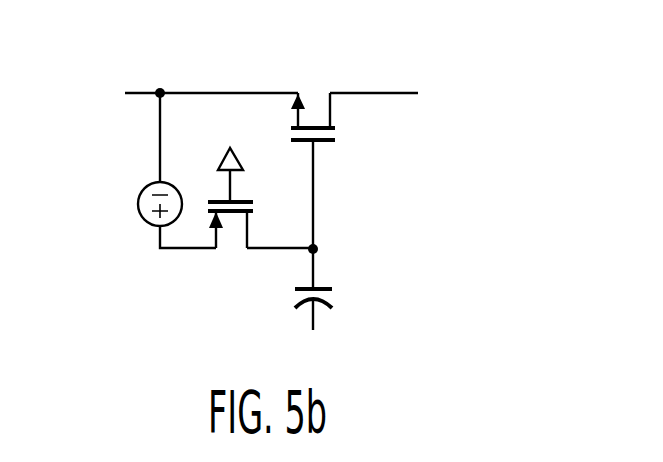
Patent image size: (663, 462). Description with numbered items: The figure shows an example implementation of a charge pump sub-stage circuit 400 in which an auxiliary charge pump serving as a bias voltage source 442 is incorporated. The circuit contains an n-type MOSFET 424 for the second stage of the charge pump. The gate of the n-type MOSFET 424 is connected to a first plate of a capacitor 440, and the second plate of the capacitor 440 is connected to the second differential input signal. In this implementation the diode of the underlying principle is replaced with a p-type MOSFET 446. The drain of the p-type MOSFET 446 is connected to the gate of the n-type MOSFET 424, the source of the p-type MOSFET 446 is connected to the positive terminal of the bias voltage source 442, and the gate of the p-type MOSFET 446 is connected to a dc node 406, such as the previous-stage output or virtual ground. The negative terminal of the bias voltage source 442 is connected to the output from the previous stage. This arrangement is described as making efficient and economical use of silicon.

The power amplifier output circuit 400 is at (384, 75).
The dc node 406 is at (222, 152).
The n-type MOSFET 424 is at (331, 112).
The capacitor 440 is at (333, 289).
The bias voltage source 442 is at (148, 214).
The p-type MOSFET 446 is at (245, 237).